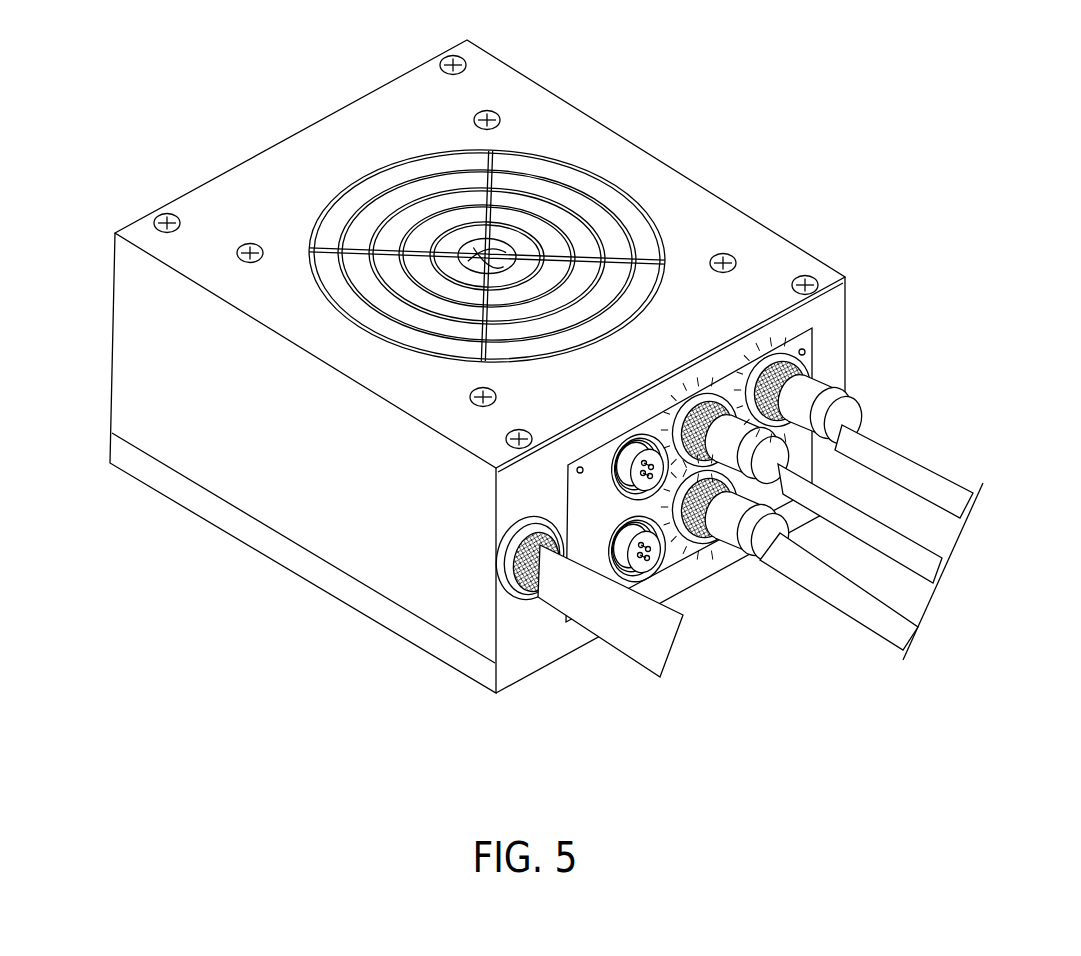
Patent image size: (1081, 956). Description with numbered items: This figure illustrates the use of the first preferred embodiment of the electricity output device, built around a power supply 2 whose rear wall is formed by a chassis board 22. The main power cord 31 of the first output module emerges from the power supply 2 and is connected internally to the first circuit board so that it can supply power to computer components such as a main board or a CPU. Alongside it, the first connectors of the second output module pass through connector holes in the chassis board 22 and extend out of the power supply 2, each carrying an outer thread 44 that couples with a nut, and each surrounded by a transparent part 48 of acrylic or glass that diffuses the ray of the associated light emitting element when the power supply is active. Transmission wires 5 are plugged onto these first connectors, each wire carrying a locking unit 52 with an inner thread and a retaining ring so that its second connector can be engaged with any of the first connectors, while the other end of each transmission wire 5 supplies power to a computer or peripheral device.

The power supply 2 is at (130, 352).
The chassis board 22 is at (525, 647).
The main power cord 31 is at (613, 612).
The outer thread 44 is at (630, 567).
The transparent part 48 is at (690, 543).
The locking unit 52 is at (812, 328).
The transmission wire 5 is at (928, 477).